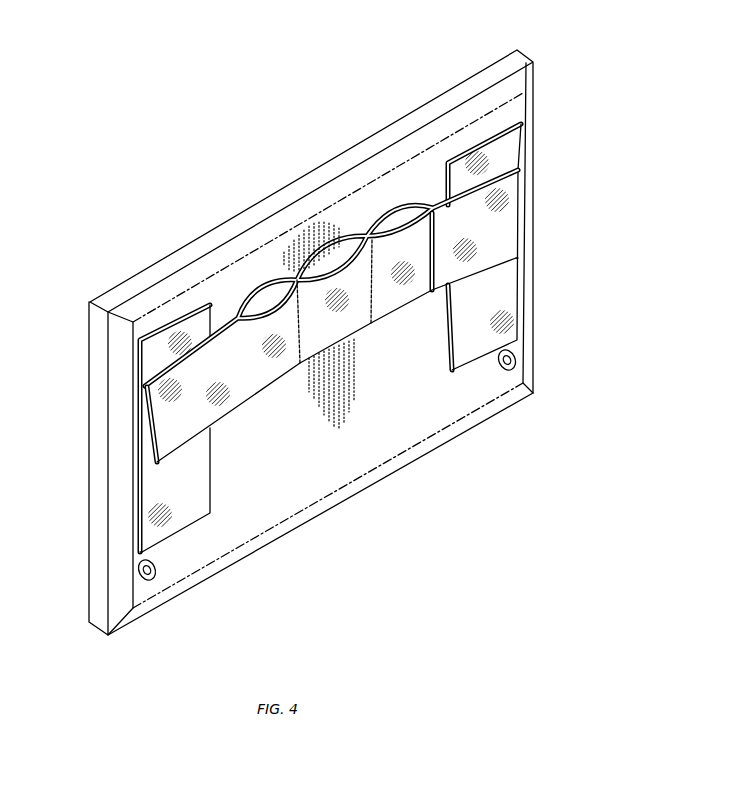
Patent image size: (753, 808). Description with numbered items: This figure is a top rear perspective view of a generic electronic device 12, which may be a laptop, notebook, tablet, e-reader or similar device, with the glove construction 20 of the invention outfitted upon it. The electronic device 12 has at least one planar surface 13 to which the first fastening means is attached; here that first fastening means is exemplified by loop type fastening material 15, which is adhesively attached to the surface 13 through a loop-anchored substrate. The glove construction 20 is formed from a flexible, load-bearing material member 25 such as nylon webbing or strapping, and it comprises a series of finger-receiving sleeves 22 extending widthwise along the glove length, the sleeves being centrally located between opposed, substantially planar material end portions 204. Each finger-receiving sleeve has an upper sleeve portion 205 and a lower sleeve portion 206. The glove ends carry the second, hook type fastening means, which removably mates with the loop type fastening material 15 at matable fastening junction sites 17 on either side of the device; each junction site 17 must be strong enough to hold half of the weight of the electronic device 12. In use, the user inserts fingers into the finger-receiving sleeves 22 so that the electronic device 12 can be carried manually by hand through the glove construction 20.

The electronic device 12 is at (518, 50).
The planar surface 13 is at (407, 178).
The loop type fastening material 15 is at (153, 490).
The matable fastening junction site 17 is at (156, 366).
The glove construction 20 is at (363, 216).
The finger-receiving sleeves 22 is at (275, 378).
The flexible, load-bearing material member 25 is at (237, 316).
The material end portions 204 is at (163, 425).
The upper sleeve portion 205 is at (273, 290).
The lower sleeve portion 206 is at (245, 405).